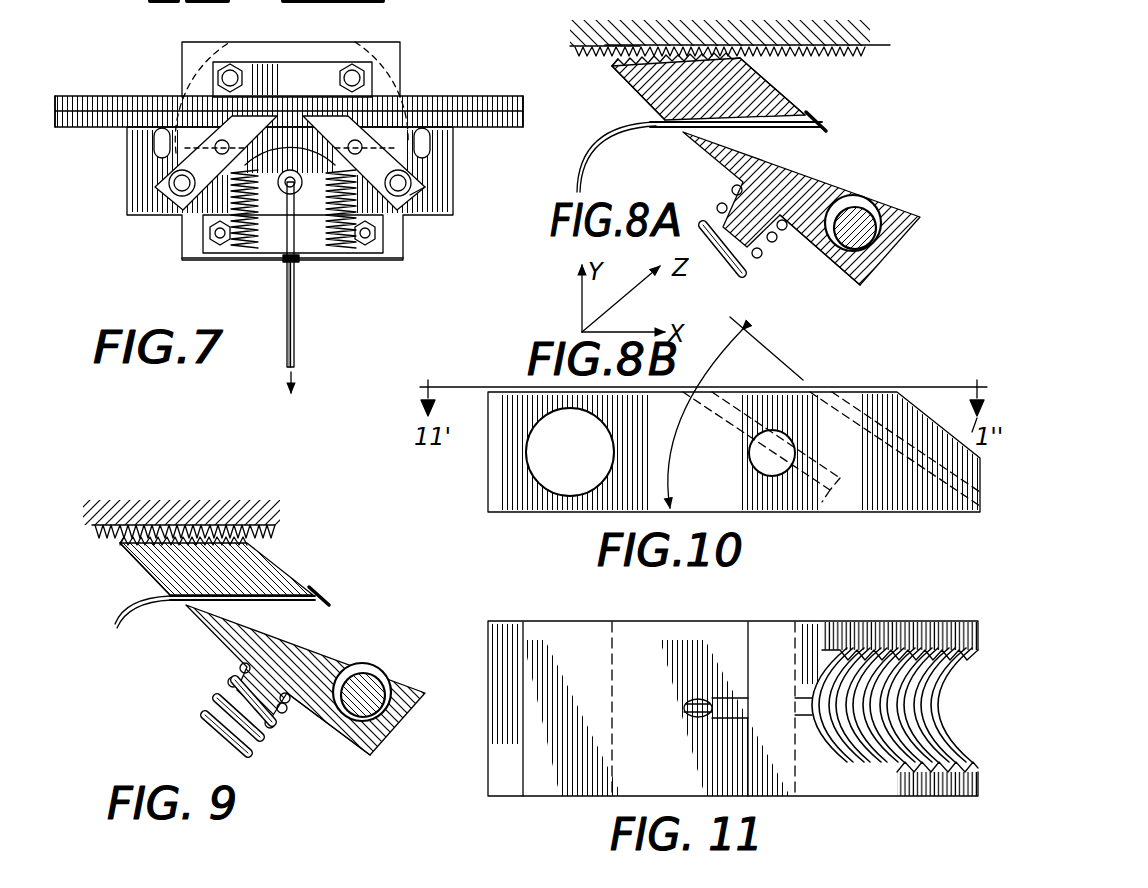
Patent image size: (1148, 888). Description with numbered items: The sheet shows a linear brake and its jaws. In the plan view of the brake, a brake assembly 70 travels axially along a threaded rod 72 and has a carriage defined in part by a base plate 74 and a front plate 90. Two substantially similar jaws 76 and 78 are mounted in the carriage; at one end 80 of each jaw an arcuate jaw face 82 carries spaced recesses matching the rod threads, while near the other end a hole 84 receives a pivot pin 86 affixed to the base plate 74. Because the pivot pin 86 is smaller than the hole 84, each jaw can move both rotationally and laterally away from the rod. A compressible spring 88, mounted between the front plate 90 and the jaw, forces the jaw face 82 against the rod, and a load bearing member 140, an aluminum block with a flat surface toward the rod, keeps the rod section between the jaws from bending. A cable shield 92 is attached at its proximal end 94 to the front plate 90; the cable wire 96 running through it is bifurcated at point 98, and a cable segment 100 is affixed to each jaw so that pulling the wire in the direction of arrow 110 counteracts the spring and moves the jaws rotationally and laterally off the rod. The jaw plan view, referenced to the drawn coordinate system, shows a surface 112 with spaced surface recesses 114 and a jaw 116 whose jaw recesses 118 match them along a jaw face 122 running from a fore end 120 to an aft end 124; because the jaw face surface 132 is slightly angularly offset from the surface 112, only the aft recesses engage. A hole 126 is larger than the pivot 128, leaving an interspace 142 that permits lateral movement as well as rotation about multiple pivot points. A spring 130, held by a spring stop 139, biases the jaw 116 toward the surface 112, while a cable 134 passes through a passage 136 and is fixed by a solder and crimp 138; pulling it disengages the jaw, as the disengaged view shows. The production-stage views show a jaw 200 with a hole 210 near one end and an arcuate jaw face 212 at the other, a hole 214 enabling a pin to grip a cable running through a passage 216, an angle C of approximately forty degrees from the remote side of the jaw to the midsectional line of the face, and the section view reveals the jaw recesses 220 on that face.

In FIG. 7, the brake assembly 70 is at (450, 60).
In FIG. 7, the threaded rod 72 is at (472, 96).
In FIG. 7, the base plate 74 is at (338, 58).
In FIG. 7, the jaw 76 is at (405, 163).
In FIG. 7, the jaw 78 is at (205, 180).
In FIG. 7, the end of jaw 80 is at (333, 57).
In FIG. 7, the arcuate jaw face 82 is at (292, 79).
In FIG. 7, the hole 84 is at (418, 190).
In FIG. 7, the pivot pin 86 is at (385, 195).
In FIG. 7, the compressible spring 88 is at (388, 212).
In FIG. 7, the front plate 90 is at (357, 258).
In FIG. 7, the cable shield 92 is at (296, 322).
In FIG. 7, the proximal end 94 is at (287, 282).
In FIG. 7, the cable wire 96 is at (287, 253).
In FIG. 7, the bifurcation point 98 is at (302, 180).
In FIG. 7, the cable segment 100 is at (290, 148).
In FIG. 7, the arrow 110 is at (291, 375).
In FIG. 7, the load bearing member 140 is at (268, 65).
In FIG. 8A, the surface 112 is at (890, 45).
In FIG. 9, the surface 112 is at (278, 522).
In FIG. 8A, the surface recesses 114 is at (805, 56).
In FIG. 9, the surface recesses 114 is at (272, 532).
In FIG. 8A, the jaw 116 is at (867, 166).
In FIG. 9, the jaw 116 is at (350, 625).
In FIG. 8A, the jaw recesses 118 is at (612, 64).
In FIG. 9, the jaw recesses 118 is at (118, 545).
In FIG. 8A, the fore end 120 is at (622, 72).
In FIG. 9, the fore end 120 is at (124, 553).
In FIG. 8A, the jaw face 122 is at (672, 58).
In FIG. 8A, the aft end 124 is at (735, 60).
In FIG. 9, the aft end 124 is at (250, 548).
In FIG. 8A, the hole 126 is at (875, 203).
In FIG. 9, the hole 126 is at (392, 710).
In FIG. 8A, the pivot 128 is at (878, 226).
In FIG. 9, the pivot 128 is at (375, 716).
In FIG. 8A, the spring 130 is at (745, 275).
In FIG. 9, the spring 130 is at (250, 755).
In FIG. 8A, the jaw face surface 132 is at (636, 88).
In FIG. 8A, the cable 134 is at (590, 152).
In FIG. 9, the cable 134 is at (140, 625).
In FIG. 8A, the passage 136 is at (783, 100).
In FIG. 8A, the solder and crimp 138 is at (828, 136).
In FIG. 8A, the spring stop 139 is at (762, 256).
In FIG. 9, the spring stop 139 is at (275, 727).
In FIG. 8A, the interspace 142 is at (838, 247).
In FIG. 9, the interspace 142 is at (355, 718).
In FIG. 10, the jaw 200 is at (570, 512).
In FIG. 10, the hole 210 is at (526, 452).
In FIG. 10, the arcuate jaw face 212 is at (893, 508).
In FIG. 11, the arcuate jaw face 212 is at (940, 704).
In FIG. 10, the hole 214 is at (775, 428).
In FIG. 10, the passage 216 is at (814, 506).
In FIG. 11, the jaw recesses 220 is at (988, 668).
In FIG. 10, the angle C is at (735, 412).